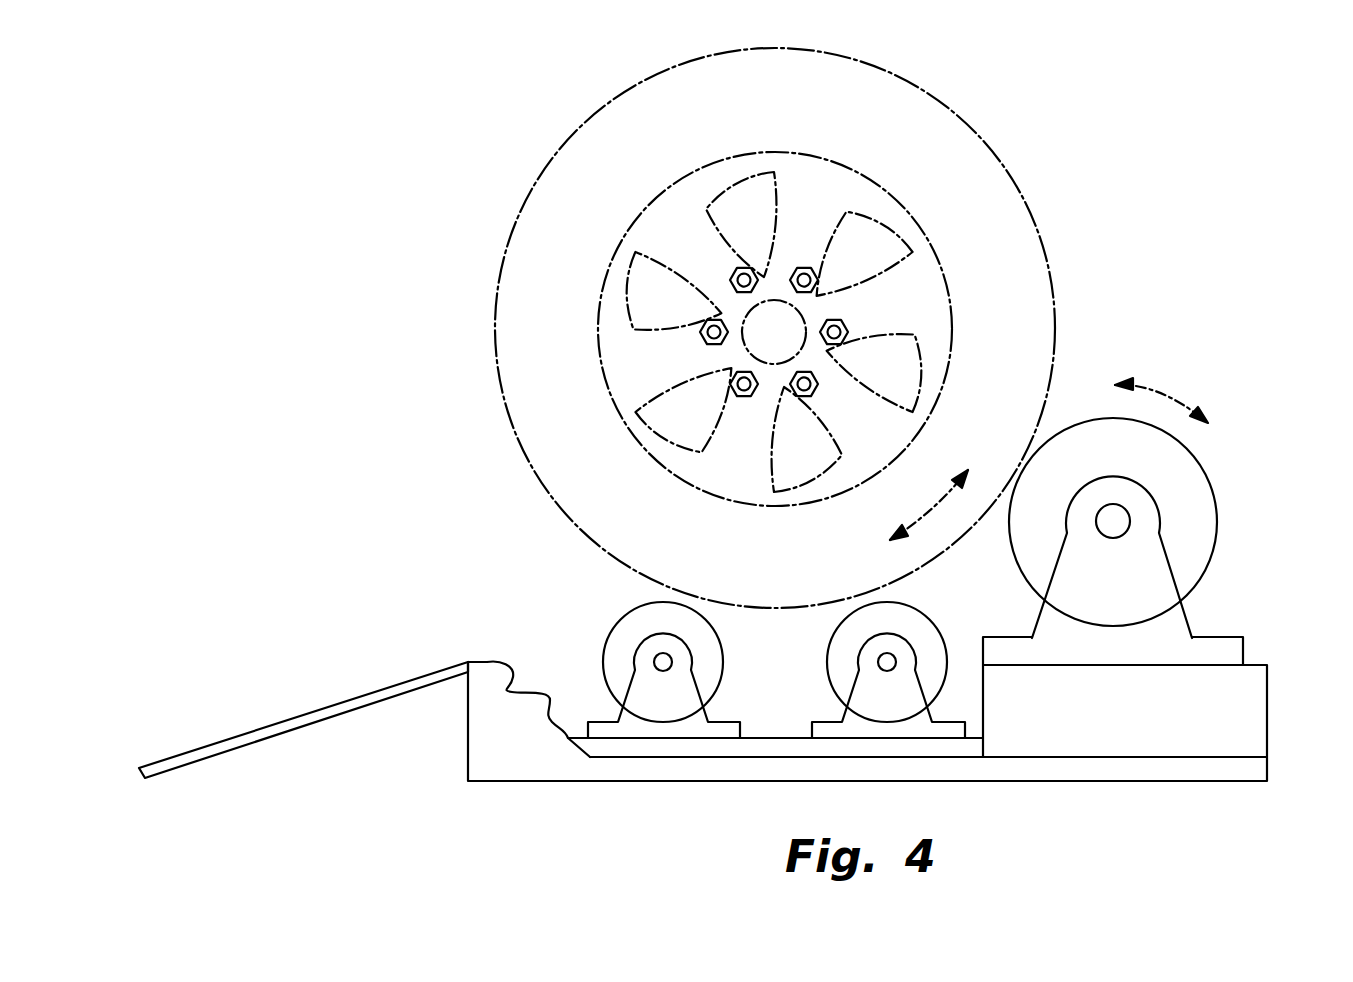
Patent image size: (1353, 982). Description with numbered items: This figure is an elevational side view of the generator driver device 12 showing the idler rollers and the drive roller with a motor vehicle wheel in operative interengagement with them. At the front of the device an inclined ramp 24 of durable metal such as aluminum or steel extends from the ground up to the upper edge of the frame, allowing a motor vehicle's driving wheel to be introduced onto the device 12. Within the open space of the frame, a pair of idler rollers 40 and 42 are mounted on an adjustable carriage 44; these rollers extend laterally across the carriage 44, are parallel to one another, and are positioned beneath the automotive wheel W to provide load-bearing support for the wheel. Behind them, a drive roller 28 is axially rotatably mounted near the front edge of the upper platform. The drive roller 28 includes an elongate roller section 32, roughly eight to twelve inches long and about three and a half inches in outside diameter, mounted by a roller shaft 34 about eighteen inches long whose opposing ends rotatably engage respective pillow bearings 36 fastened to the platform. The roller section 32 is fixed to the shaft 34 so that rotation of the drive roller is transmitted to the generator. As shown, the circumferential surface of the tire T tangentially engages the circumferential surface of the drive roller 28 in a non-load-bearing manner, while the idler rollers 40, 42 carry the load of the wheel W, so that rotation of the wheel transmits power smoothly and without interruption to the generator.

The generator driver device 12 is at (1170, 732).
The inclined ramp 24 is at (332, 705).
The drive roller 28 is at (1200, 463).
The roller section 32 is at (1198, 517).
The roller shaft 34 is at (1117, 523).
The pillow bearings 36 is at (1093, 640).
The idler roller 40 is at (625, 617).
The idler roller 42 is at (937, 617).
The adjustable carriage 44 is at (662, 743).
The automotive wheel W is at (998, 160).
The tire T is at (1052, 278).